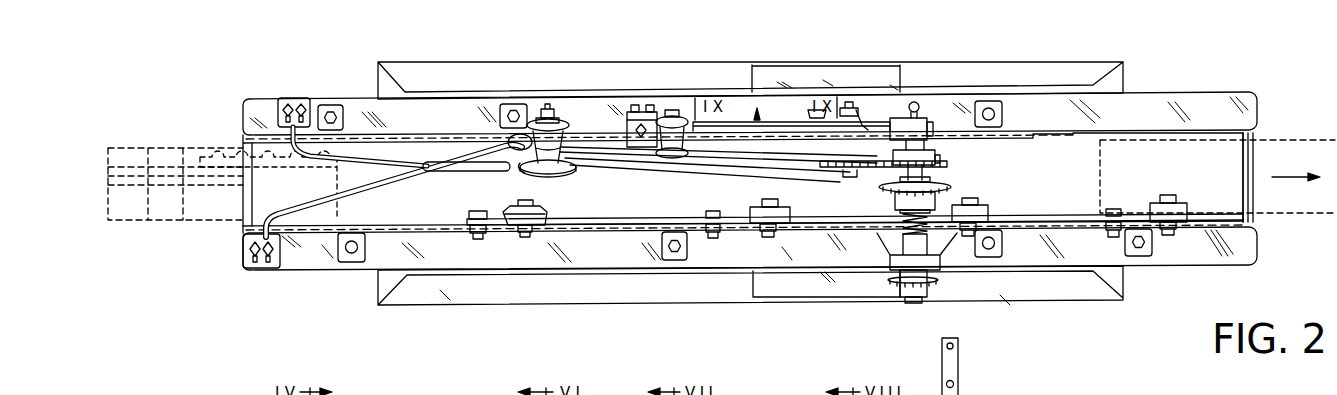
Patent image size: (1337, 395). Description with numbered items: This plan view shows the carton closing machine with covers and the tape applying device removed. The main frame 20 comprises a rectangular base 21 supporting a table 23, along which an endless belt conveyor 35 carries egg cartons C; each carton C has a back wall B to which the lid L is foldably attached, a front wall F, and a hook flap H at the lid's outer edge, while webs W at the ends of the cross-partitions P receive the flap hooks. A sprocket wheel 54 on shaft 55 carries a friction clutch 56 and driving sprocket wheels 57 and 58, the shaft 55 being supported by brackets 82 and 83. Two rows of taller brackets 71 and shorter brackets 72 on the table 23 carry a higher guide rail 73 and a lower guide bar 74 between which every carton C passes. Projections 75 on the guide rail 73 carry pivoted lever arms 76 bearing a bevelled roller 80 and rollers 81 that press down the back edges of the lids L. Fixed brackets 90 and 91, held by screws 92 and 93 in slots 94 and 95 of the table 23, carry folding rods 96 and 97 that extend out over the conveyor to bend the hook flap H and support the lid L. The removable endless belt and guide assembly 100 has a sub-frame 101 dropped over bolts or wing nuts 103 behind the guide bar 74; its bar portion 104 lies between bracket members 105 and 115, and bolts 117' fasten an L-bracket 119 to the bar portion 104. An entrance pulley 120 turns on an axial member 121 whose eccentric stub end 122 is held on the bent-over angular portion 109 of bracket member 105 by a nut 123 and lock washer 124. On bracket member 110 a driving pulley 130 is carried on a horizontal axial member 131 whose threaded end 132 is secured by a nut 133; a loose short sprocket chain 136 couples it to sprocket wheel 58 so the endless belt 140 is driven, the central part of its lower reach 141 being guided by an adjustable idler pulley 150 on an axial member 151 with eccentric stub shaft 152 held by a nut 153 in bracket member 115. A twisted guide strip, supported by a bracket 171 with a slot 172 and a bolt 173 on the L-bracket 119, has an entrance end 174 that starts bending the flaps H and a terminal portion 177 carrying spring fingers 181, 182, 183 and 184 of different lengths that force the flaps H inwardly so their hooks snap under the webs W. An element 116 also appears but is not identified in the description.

The main frame 20 is at (1135, 295).
The rectangular base 21 is at (1005, 290).
The table 23 is at (1208, 267).
The endless belt conveyor 35 is at (1073, 183).
The sprocket wheel 54 is at (926, 288).
The shaft 55 is at (908, 297).
The friction clutch 56 is at (955, 197).
The driving sprocket wheel 57 is at (948, 186).
The driving sprocket wheel 58 is at (940, 157).
The taller brackets 71 is at (351, 262).
The shorter brackets 72 is at (336, 104).
The higher guide rail 73 is at (425, 235).
The lower guide bar 74 is at (425, 140).
The projections 75 is at (478, 233).
The lever arms 76 is at (523, 236).
The bevelled roller 80 is at (540, 209).
The rollers 81 is at (785, 232).
The bracket 82 is at (890, 262).
The bracket 83 is at (920, 118).
The fixed bracket 90 is at (248, 250).
The fixed bracket 91 is at (276, 108).
The screw 92 is at (254, 266).
The screw 93 is at (286, 106).
The slot 94 is at (268, 264).
The slot 95 is at (300, 103).
The folding rod 96 is at (386, 182).
The folding rod 97 is at (449, 171).
The removable endless belt and guide assembly 100 is at (694, 190).
The sub-frame 101 is at (762, 92).
The bolts or wing nuts 103 is at (816, 110).
The bar portion 104 is at (800, 122).
The bracket member 105 is at (616, 113).
The bent over angular portion 109 is at (566, 126).
The bracket member 110 is at (862, 120).
The bracket member 115 is at (682, 128).
The bar 116 is at (725, 150).
The bolts 117' is at (640, 75).
The L-bracket 119 is at (670, 110).
The pulley 120 is at (556, 175).
The axial member 121 is at (526, 173).
The eccentric stub end 122 is at (547, 104).
The nut 123 is at (554, 118).
The lock washer 124 is at (540, 115).
The driving pulley 130 is at (886, 168).
The axial member 131 is at (849, 178).
The shaft end 132 is at (845, 110).
The nut 133 is at (850, 102).
The short sprocket chain 136 is at (950, 164).
The endless belt 140 is at (760, 170).
The lower reach 141 is at (606, 175).
The adjustable idler pulley 150 is at (698, 165).
The axial member 151 is at (672, 175).
The stub shaft 152 is at (678, 118).
The nut 153 is at (674, 116).
The bracket 171 is at (634, 104).
The slot 172 is at (671, 159).
The bolt 173 is at (639, 148).
The entrance end 174 is at (508, 142).
The terminal portion 177 is at (773, 150).
The spring finger 181 is at (744, 160).
The spring finger 182 is at (775, 162).
The spring finger 183 is at (793, 168).
The spring finger 184 is at (815, 166).
The webs W is at (182, 148).
The egg carton C is at (187, 142).
The front wall F is at (240, 148).
The hook flap H is at (277, 165).
The lid L is at (240, 185).
The cross-partitions P is at (181, 203).
The back wall B is at (200, 222).